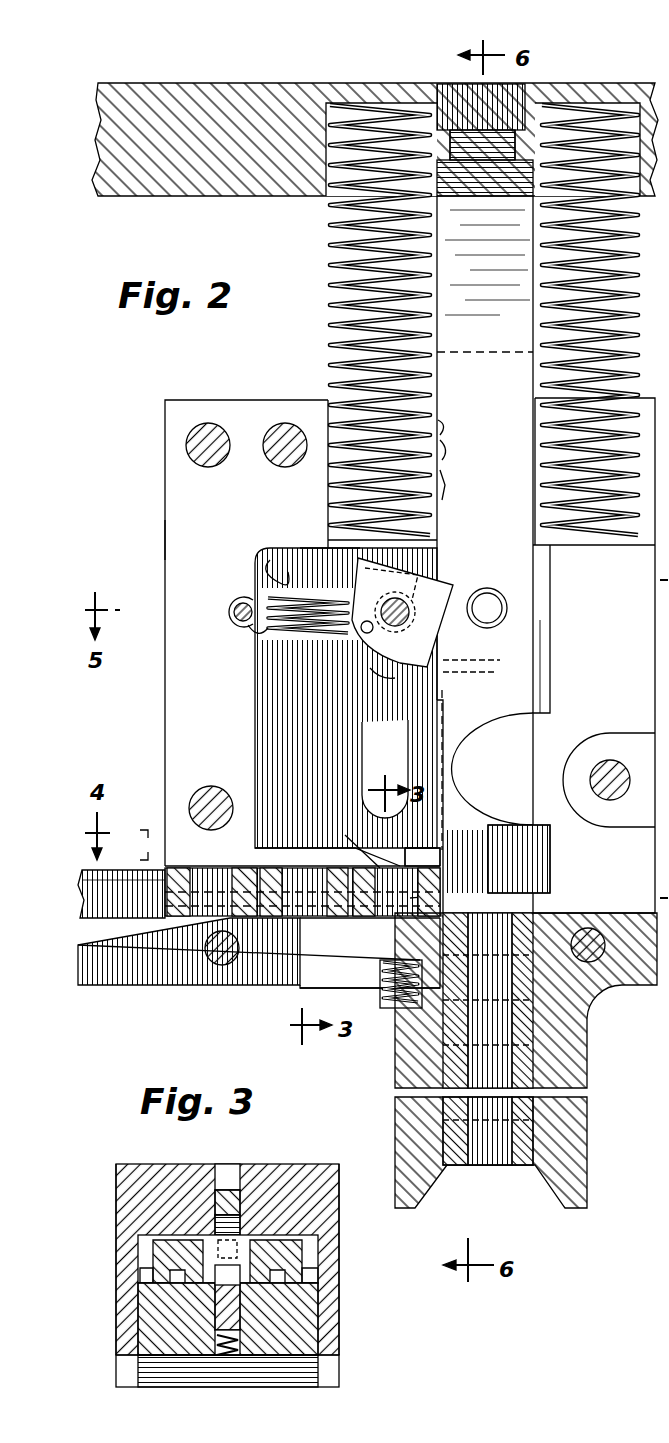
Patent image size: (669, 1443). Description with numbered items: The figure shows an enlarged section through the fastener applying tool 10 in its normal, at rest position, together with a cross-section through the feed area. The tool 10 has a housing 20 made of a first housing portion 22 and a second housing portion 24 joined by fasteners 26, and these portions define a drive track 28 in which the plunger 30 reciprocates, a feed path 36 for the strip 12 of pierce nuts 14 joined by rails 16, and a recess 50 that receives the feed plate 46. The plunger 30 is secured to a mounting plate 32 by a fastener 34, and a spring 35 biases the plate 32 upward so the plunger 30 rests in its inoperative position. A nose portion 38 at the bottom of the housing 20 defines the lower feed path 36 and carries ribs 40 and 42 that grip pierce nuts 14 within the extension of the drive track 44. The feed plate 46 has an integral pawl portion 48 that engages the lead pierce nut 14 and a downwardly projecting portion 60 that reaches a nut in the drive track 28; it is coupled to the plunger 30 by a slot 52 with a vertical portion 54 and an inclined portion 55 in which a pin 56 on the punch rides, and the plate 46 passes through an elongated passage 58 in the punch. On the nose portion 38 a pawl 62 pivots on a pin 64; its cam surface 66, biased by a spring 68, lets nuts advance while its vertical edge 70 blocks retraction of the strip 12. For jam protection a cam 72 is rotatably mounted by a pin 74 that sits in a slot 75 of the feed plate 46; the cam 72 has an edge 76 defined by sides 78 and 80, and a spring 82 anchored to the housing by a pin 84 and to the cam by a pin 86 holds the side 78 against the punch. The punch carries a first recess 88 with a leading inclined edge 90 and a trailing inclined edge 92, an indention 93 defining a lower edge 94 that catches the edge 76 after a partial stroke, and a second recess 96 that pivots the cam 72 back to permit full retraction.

In FIG. 2, the tool 10 is at (150, 366).
In FIG. 2, the strip of pierce nuts 12 is at (125, 930).
In FIG. 3, the strip of pierce nuts 12 is at (270, 1245).
In FIG. 2, the pierce nut 14 is at (250, 910).
In FIG. 3, the pierce nut 14 is at (160, 1258).
In FIG. 2, the rail 16 is at (165, 915).
In FIG. 3, the rail 16 is at (148, 1275).
In FIG. 2, the housing 20 is at (165, 490).
In FIG. 3, the housing 20 is at (290, 1160).
In FIG. 2, the first housing portion 22 is at (165, 518).
In FIG. 3, the first housing portion 22 is at (116, 1175).
In FIG. 3, the second housing portion 24 is at (320, 1164).
In FIG. 2, the fastener 26 is at (288, 425).
In FIG. 2, the drive track 28 is at (570, 725).
In FIG. 2, the plunger 30 is at (488, 536).
In FIG. 2, the mounting plate 32 is at (205, 100).
In FIG. 2, the fastener 34 is at (460, 90).
In FIG. 2, the spring 35 is at (330, 235).
In FIG. 2, the feed path 36 is at (160, 870).
In FIG. 3, the feed path 36 is at (310, 1245).
In FIG. 2, the nose portion 38 is at (592, 1172).
In FIG. 3, the nose portion 38 is at (310, 1388).
In FIG. 2, the rib 40 is at (525, 1150).
In FIG. 2, the rib 42 is at (450, 1140).
In FIG. 2, the extension of the drive track 44 is at (505, 1180).
In FIG. 2, the feed plate 46 is at (250, 688).
In FIG. 3, the feed plate 46 is at (245, 1195).
In FIG. 2, the pawl portion 48 is at (425, 848).
In FIG. 3, the pawl portion 48 is at (220, 1225).
In FIG. 3, the recess 50 is at (215, 1200).
In FIG. 2, the slot 52 is at (362, 720).
In FIG. 2, the vertical portion 54 is at (362, 745).
In FIG. 3, the vertical portion 54 is at (228, 1185).
In FIG. 2, the inclined portion 55 is at (382, 672).
In FIG. 2, the pin 56 is at (495, 612).
In FIG. 2, the elongated passage 58 is at (478, 352).
In FIG. 2, the downwardly projecting portion 60 is at (550, 885).
In FIG. 3, the downwardly projecting portion 60 is at (300, 1262).
In FIG. 2, the pawl 62 is at (285, 990).
In FIG. 3, the pawl 62 is at (245, 1318).
In FIG. 2, the pin 64 is at (222, 965).
In FIG. 2, the cam surface 66 is at (355, 842).
In FIG. 3, the cam surface 66 is at (225, 1275).
In FIG. 2, the spring 68 is at (395, 1010).
In FIG. 3, the spring 68 is at (228, 1350).
In FIG. 2, the vertical edge 70 is at (440, 905).
In FIG. 2, the cam 72 is at (355, 558).
In FIG. 2, the pin 74 is at (395, 650).
In FIG. 2, the slot 75 is at (272, 570).
In FIG. 2, the edge 76 is at (415, 600).
In FIG. 2, the side 78 is at (450, 665).
In FIG. 2, the side 80 is at (440, 530).
In FIG. 2, the spring 82 is at (262, 632).
In FIG. 2, the pin 84 is at (230, 610).
In FIG. 2, the pin 86 is at (345, 630).
In FIG. 2, the recess 88 is at (455, 590).
In FIG. 2, the leading inclined edge 90 is at (375, 628).
In FIG. 2, the trailing inclined edge 92 is at (440, 552).
In FIG. 2, the indention 93 is at (448, 442).
In FIG. 2, the lower edge 94 is at (445, 480).
In FIG. 2, the second recess 96 is at (445, 420).